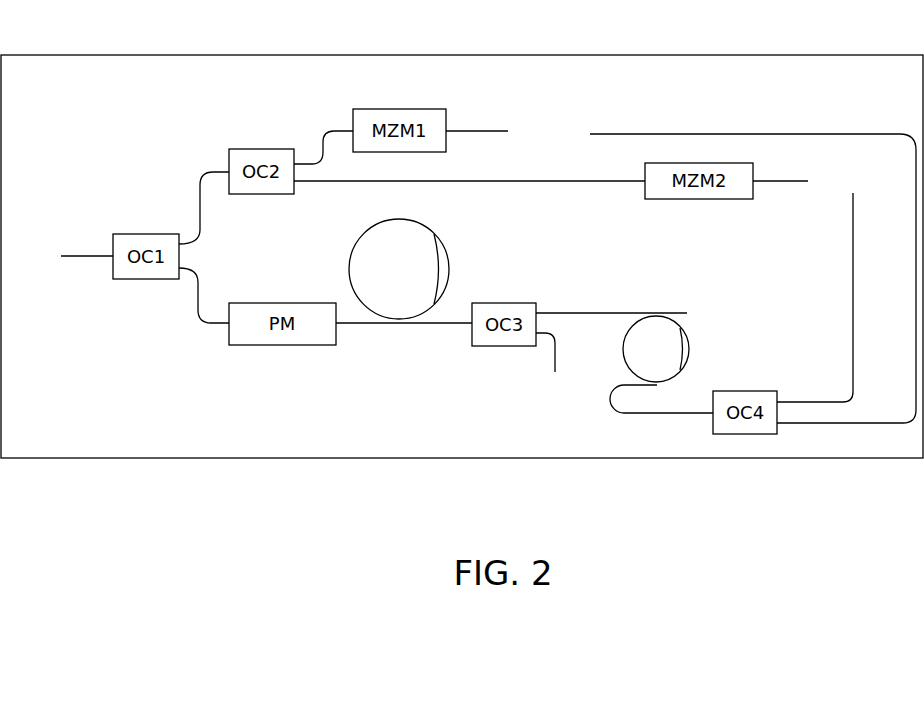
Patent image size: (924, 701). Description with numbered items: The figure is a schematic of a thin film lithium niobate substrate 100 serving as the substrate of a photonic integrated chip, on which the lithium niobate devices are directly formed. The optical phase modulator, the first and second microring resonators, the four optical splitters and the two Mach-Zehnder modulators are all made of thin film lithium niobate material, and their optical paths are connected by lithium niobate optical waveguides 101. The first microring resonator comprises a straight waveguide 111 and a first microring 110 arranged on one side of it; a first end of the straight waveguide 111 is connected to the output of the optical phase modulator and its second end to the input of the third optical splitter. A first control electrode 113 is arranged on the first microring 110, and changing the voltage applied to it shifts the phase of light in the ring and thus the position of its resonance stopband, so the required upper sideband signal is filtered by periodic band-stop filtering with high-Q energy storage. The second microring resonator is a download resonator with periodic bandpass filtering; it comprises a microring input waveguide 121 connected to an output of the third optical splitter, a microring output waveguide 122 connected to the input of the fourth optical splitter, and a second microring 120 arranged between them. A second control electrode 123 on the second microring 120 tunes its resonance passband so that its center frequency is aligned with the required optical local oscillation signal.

The thin film lithium niobate substrate 100 is at (296, 437).
The lithium niobate optical waveguide 101 is at (195, 305).
The first microring 110 is at (353, 248).
The straight waveguide 111 is at (398, 323).
The first control electrode 113 is at (450, 268).
The second microring 120 is at (623, 358).
The microring input waveguide 121 is at (653, 313).
The microring output waveguide 122 is at (657, 385).
The second control electrode 123 is at (688, 340).